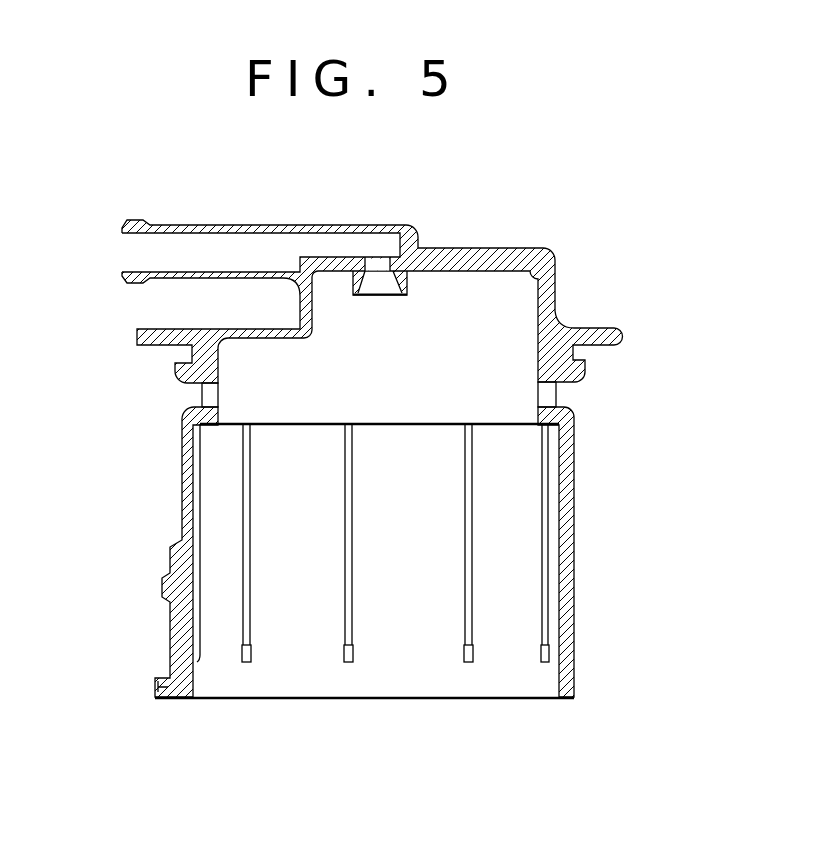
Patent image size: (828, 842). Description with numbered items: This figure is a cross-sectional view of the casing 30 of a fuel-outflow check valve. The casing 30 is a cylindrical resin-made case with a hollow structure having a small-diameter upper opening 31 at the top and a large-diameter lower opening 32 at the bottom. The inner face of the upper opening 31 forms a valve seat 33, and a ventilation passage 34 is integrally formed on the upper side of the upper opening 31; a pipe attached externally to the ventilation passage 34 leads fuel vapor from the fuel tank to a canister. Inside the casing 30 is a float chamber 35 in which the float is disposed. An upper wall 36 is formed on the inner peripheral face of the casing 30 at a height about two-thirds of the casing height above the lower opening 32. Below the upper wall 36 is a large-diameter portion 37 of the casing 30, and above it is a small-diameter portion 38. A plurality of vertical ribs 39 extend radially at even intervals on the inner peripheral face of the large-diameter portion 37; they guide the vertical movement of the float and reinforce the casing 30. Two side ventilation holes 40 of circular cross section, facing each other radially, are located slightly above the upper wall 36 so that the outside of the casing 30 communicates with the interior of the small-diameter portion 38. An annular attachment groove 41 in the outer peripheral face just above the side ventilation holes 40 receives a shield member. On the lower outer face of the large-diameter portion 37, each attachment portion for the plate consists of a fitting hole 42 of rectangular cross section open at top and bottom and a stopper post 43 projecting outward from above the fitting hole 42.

The casing 30 is at (590, 496).
The upper opening 31 is at (380, 263).
The lower opening 32 is at (530, 699).
The valve seat 33 is at (402, 245).
The ventilation passage 34 is at (218, 226).
The float chamber 35 is at (218, 537).
The upper wall 36 is at (183, 417).
The large-diameter portion 37 is at (563, 566).
The small-diameter portion 38 is at (532, 307).
The vertical ribs 39 is at (193, 627).
The side ventilation holes 40 is at (200, 397).
The attachment groove 41 is at (183, 356).
The fitting hole 42 is at (165, 699).
The stopper post 43 is at (160, 583).